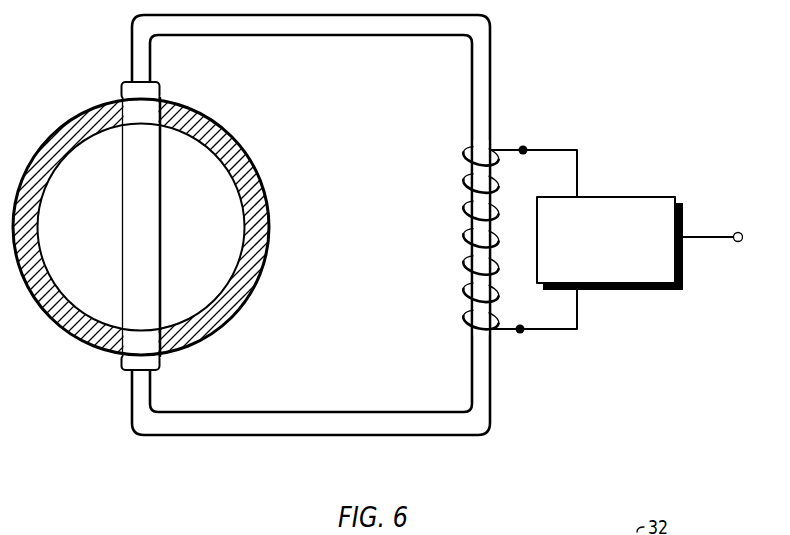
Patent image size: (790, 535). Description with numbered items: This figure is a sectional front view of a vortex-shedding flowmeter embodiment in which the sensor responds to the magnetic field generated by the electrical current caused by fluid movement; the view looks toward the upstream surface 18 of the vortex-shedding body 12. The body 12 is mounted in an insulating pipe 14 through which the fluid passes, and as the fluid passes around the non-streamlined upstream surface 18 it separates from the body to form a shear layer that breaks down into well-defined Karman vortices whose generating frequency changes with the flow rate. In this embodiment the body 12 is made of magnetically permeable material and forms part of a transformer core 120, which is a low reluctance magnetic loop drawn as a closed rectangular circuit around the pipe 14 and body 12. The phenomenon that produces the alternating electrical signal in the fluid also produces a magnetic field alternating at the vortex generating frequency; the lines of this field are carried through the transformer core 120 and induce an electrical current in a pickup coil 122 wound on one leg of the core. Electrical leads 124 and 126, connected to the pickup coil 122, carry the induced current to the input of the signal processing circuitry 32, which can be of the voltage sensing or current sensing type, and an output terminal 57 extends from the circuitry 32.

The vortex-shedding body 12 is at (111, 205).
The insulating pipe 14 is at (216, 118).
The upstream surface 18 is at (162, 237).
The signal processing circuitry 32 is at (632, 197).
The output terminal 57 is at (692, 236).
The transformer core 120 is at (490, 435).
The pickup coil 122 is at (463, 262).
The electrical lead 124 is at (547, 145).
The electrical lead 126 is at (562, 331).